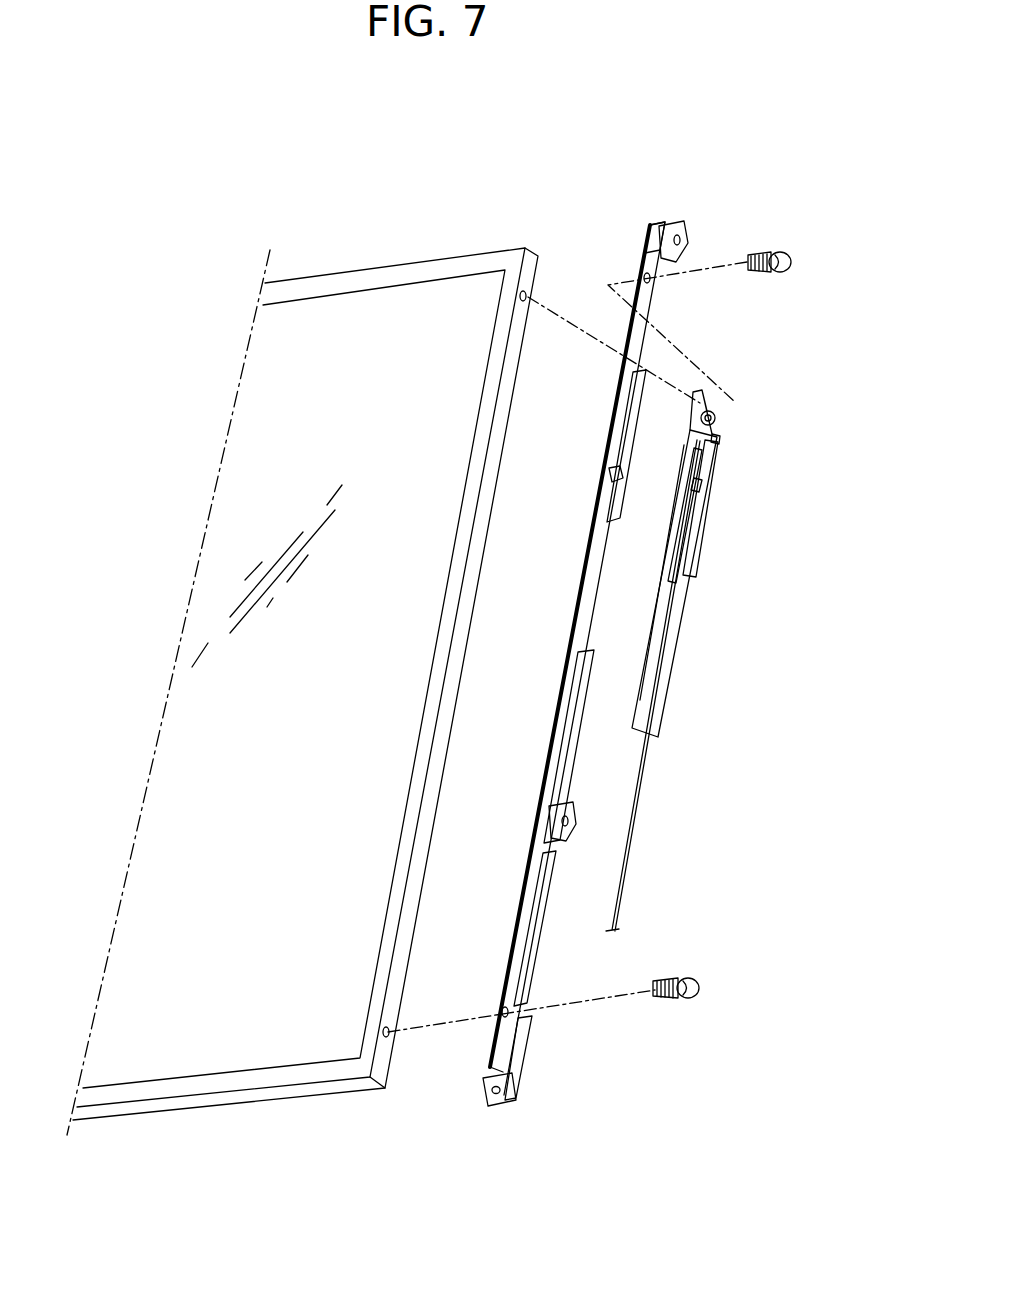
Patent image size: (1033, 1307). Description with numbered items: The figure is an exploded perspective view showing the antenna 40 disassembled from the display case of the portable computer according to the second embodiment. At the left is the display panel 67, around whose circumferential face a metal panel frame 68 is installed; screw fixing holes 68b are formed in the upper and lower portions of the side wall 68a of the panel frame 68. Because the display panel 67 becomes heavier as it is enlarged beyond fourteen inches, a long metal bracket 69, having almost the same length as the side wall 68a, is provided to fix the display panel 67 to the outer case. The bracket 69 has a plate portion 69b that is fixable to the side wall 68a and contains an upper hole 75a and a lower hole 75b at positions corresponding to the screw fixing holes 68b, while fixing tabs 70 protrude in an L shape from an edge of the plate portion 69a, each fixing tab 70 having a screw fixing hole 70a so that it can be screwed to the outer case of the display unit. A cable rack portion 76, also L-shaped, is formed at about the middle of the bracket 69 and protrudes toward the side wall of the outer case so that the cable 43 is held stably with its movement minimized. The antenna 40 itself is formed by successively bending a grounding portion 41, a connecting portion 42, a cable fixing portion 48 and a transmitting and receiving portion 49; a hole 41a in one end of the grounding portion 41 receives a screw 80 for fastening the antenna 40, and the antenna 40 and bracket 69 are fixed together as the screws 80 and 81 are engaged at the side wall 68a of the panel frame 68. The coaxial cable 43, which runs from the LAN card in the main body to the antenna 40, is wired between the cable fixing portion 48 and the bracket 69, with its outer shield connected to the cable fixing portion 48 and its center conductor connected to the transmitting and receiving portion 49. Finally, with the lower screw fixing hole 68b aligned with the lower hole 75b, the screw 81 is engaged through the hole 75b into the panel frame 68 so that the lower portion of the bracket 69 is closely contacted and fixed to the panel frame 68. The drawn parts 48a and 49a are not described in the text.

The antenna 40 is at (709, 630).
The grounding portion 41 is at (705, 533).
The hole 41a is at (705, 405).
The connecting portion 42 is at (678, 612).
The coaxial cable 43 is at (716, 418).
The cable fixing portion 48 is at (748, 505).
The hinge member protrusion 48a is at (722, 440).
The transmitting and receiving portion 49 is at (730, 516).
The hinge member protrusion 49a is at (702, 486).
The display panel 67 is at (410, 305).
The panel frame 68 is at (348, 643).
The side wall 68a is at (535, 262).
The screw fixing holes 68b is at (530, 296).
The bracket 69 is at (660, 692).
The plate portion 69a is at (492, 1106).
The plate portion 69b is at (640, 312).
The fixing tabs 70 is at (616, 519).
The screw fixing hole 70a is at (684, 241).
The upper hole 75a is at (652, 283).
The lower hole 75b is at (512, 1018).
The cable rack portion 76 is at (610, 476).
The screw 80 is at (778, 251).
The screw 81 is at (690, 977).